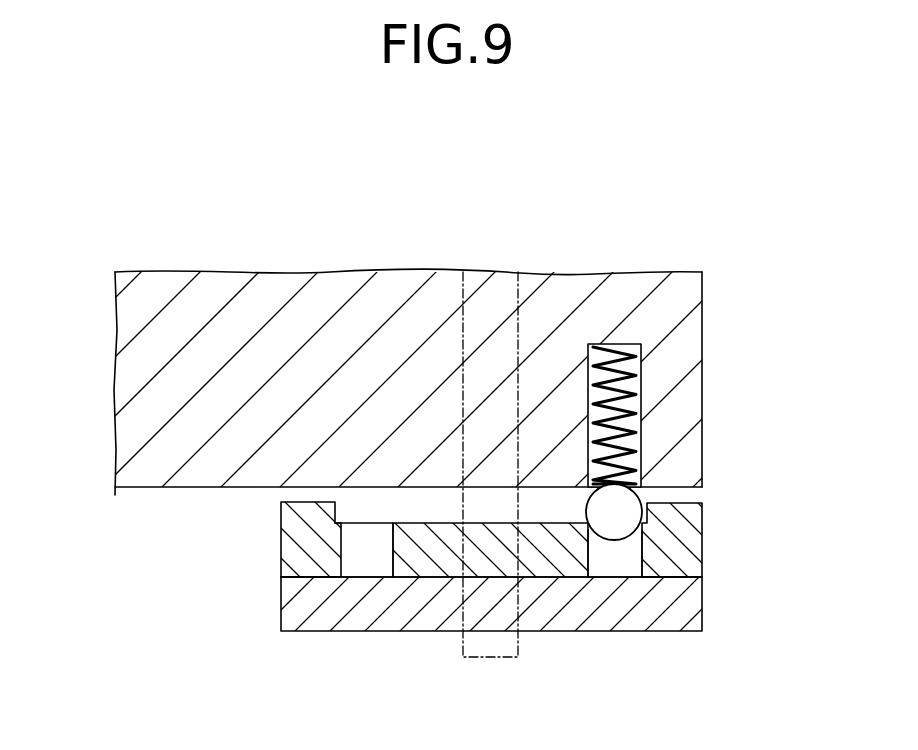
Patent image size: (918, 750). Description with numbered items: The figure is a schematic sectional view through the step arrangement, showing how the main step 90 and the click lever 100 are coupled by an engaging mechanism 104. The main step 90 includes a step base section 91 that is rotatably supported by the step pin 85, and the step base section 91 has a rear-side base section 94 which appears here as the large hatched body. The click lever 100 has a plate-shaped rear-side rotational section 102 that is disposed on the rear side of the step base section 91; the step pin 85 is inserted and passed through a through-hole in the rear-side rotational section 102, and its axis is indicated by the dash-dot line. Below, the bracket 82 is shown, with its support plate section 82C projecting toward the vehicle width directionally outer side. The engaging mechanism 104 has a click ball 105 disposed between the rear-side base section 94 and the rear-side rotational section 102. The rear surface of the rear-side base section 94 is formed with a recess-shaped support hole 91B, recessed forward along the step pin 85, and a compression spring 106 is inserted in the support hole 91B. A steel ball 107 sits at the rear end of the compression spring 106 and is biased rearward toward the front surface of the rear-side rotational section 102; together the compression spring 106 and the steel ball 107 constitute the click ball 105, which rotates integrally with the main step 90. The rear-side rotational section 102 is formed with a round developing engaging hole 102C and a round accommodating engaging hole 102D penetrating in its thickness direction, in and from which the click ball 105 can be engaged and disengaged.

The main step 90 is at (454, 367).
The step base section 91 is at (367, 308).
The rear-side base section 94 is at (345, 488).
The step pin 85 is at (520, 332).
The support hole 91B is at (645, 363).
The click ball 105 is at (721, 443).
The compression spring 106 is at (645, 410).
The steel ball 107 is at (636, 495).
The click lever 100 is at (475, 612).
The engaging mechanism 104 is at (683, 556).
The rear-side rotational section 102 is at (488, 623).
The accommodating engaging hole 102D is at (392, 557).
The developing engaging hole 102C is at (628, 553).
The bracket 82 is at (469, 650).
The support plate section 82C is at (429, 614).